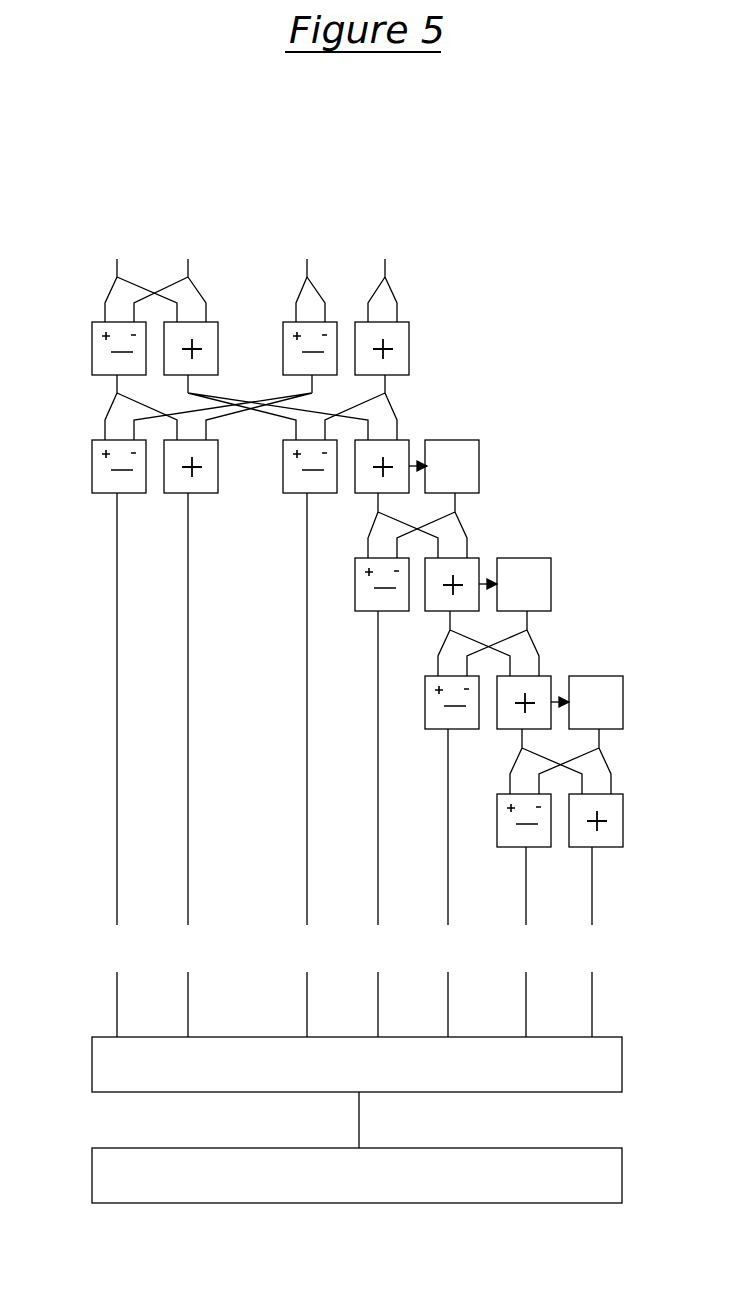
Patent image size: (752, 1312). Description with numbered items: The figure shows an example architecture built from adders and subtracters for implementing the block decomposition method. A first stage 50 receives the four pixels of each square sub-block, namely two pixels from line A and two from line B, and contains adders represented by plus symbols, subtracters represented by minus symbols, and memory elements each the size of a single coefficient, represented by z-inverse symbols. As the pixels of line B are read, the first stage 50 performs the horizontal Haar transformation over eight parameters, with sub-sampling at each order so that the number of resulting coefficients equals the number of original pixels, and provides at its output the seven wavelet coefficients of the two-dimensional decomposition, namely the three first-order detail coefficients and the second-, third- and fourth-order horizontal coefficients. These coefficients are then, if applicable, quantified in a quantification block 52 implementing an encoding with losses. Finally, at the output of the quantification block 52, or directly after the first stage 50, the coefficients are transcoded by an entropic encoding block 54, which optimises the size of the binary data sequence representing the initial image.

The first stage 50 is at (83, 323).
The quantification block 52 is at (357, 1064).
The entropic encoding block 54 is at (357, 1175).